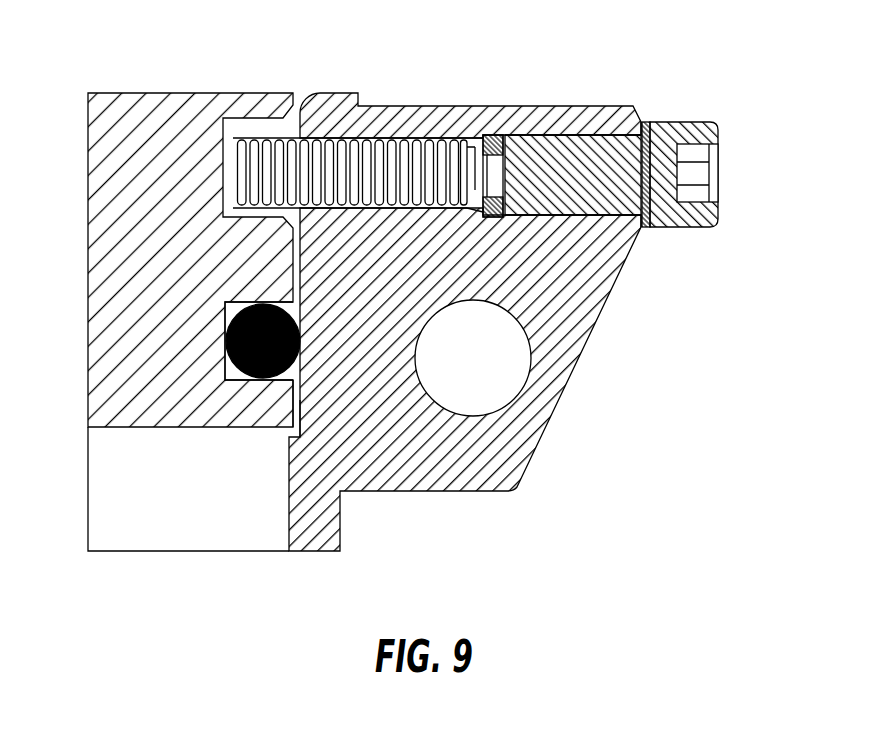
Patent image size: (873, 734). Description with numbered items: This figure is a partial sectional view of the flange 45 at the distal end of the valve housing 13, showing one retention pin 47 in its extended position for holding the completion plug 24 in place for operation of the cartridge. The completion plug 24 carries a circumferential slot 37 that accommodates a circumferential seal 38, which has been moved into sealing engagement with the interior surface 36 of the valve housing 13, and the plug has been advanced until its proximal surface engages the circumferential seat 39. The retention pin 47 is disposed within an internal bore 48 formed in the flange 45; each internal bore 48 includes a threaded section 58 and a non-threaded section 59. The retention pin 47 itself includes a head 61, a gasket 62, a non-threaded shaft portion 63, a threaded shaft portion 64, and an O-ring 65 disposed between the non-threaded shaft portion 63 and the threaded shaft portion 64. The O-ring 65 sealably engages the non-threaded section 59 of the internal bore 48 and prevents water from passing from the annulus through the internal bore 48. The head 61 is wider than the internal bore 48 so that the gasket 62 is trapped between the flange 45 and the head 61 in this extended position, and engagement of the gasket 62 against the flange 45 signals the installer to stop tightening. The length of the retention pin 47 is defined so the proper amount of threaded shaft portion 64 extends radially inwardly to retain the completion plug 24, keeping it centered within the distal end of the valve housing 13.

The valve housing 13 is at (383, 98).
The completion plug 24 is at (148, 90).
The interior surface 36 is at (290, 503).
The circumferential slot 37 is at (232, 302).
The circumferential seal 38 is at (253, 300).
The circumferential seat 39 is at (293, 430).
The flange 45 is at (395, 468).
The retention pin 47 is at (614, 131).
The internal bore 48 is at (640, 224).
The threaded section 58 is at (340, 135).
The non-threaded section 59 is at (563, 142).
The head 61 is at (685, 122).
The gasket 62 is at (646, 122).
The non-threaded shaft portion 63 is at (587, 201).
The threaded shaft portion 64 is at (448, 147).
The O-ring 65 is at (497, 217).